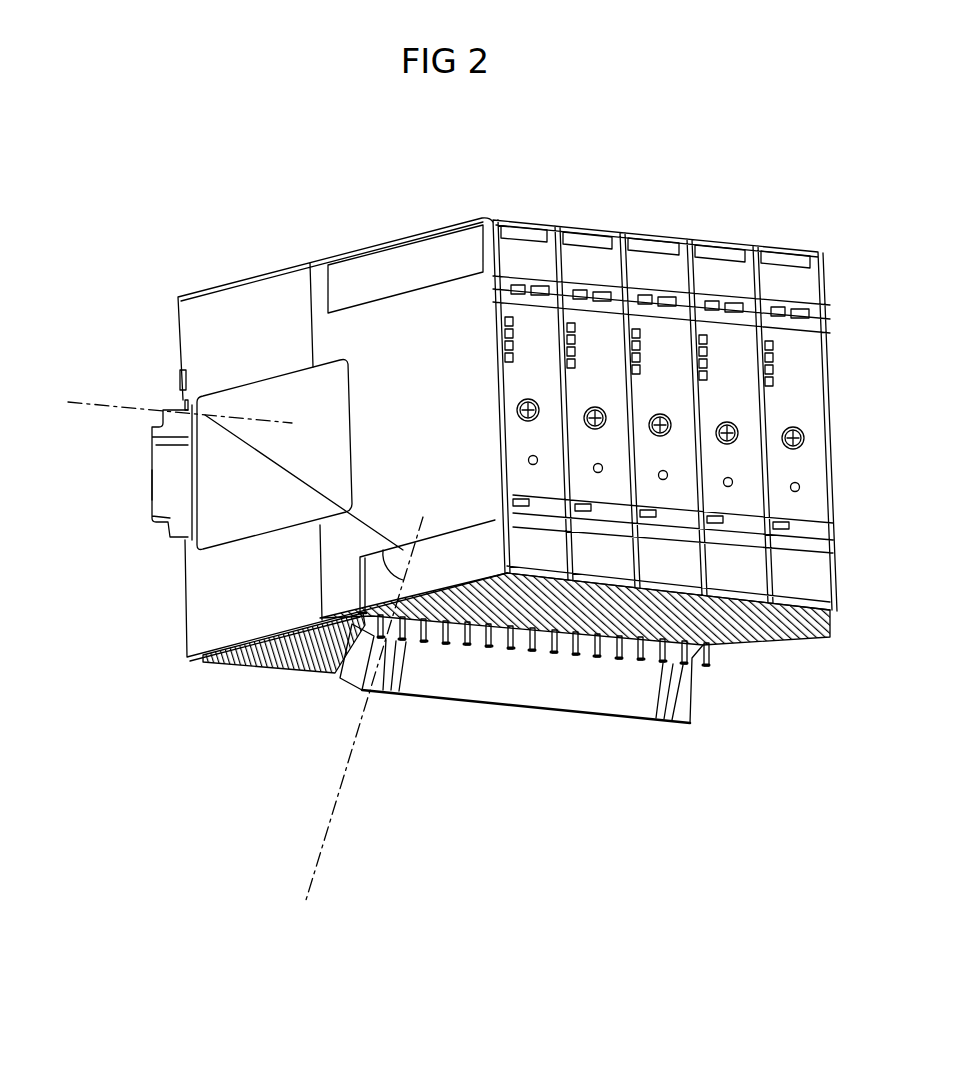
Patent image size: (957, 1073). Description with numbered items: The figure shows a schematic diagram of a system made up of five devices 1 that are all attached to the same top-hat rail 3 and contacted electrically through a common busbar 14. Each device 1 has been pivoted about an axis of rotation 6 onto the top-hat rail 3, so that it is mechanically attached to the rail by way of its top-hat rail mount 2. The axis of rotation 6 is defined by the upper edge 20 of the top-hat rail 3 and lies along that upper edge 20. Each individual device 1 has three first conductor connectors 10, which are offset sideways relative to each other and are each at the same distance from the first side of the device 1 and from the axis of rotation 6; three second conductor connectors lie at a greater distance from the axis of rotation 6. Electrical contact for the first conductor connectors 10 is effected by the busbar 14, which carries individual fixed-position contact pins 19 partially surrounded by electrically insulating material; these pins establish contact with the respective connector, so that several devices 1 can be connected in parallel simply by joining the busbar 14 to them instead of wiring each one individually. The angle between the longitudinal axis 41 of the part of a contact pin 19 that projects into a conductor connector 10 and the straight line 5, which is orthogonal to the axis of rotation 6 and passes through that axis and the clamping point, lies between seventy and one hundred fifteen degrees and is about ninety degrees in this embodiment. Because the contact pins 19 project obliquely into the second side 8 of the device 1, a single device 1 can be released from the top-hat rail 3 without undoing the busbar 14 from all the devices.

The device 1 is at (519, 219).
The top-hat rail mount 2 is at (187, 460).
The top-hat rail 3 is at (152, 495).
The straight line 5 is at (297, 478).
The axis of rotation 6 is at (88, 402).
The second side 8 is at (240, 664).
The first conductor connectors 10 is at (345, 668).
The busbar 14 is at (560, 697).
The contact pins 19 is at (399, 692).
The upper edge 20 is at (177, 408).
The longitudinal axis 41 is at (322, 850).